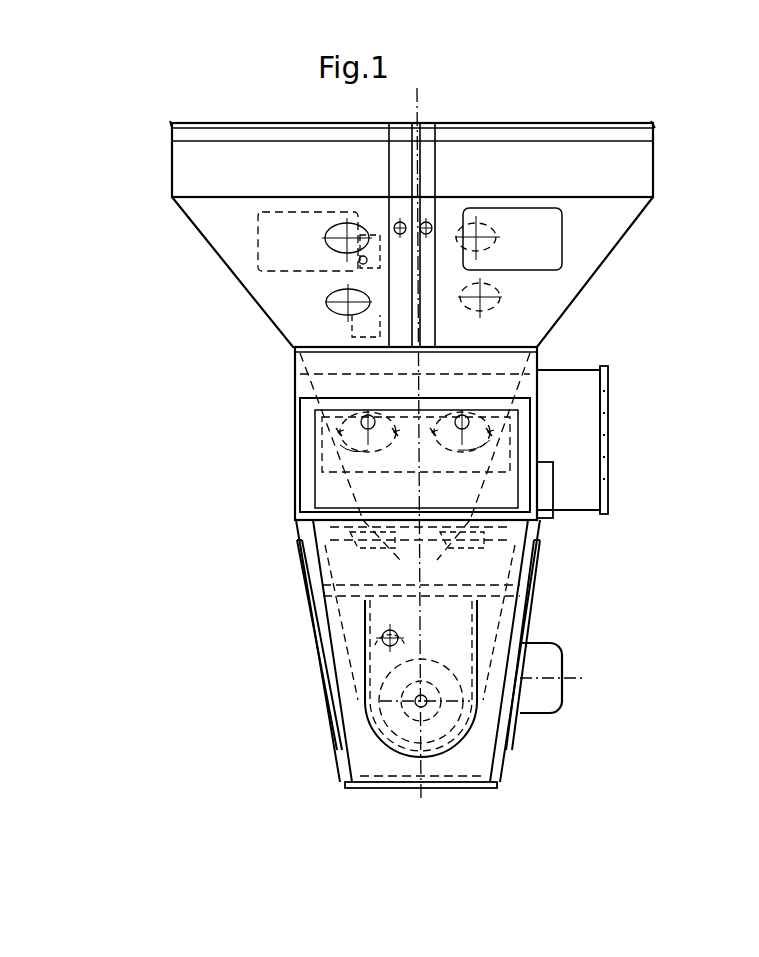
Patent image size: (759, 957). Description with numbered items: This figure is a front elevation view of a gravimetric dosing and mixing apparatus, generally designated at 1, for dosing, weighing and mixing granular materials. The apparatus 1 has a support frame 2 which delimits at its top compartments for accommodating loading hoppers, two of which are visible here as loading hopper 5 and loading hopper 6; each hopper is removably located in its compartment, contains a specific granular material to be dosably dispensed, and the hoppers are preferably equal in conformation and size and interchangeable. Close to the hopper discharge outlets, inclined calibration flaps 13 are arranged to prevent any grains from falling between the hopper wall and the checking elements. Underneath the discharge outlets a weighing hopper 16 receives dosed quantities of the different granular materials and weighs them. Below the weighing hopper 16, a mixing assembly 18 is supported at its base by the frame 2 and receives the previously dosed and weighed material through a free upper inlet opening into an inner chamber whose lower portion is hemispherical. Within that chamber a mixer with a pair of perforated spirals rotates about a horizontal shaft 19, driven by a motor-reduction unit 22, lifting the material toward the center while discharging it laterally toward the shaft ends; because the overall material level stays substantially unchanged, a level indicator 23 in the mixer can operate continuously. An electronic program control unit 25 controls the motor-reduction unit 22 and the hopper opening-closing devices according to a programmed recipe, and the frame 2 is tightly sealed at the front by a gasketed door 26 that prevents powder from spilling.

The gravimetric dosing apparatus 1 is at (293, 527).
The support frame 2 is at (538, 362).
The loading hopper 5 is at (625, 163).
The loading hopper 6 is at (190, 168).
The inclined calibration flaps 13 is at (350, 437).
The weighing hopper 16 is at (340, 485).
The mixing assembly 18 is at (365, 678).
The horizontal shaft 19 is at (421, 701).
The motor-reduction unit 22 is at (540, 692).
The level indicator 23 is at (375, 638).
The electronic program control unit 25 is at (609, 412).
The door 26 is at (540, 590).